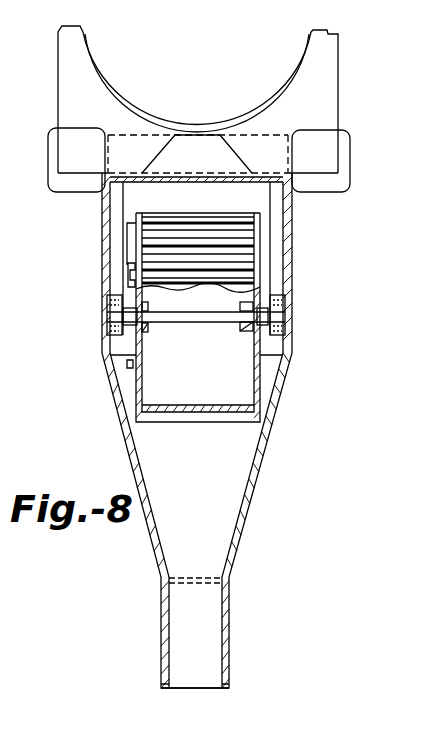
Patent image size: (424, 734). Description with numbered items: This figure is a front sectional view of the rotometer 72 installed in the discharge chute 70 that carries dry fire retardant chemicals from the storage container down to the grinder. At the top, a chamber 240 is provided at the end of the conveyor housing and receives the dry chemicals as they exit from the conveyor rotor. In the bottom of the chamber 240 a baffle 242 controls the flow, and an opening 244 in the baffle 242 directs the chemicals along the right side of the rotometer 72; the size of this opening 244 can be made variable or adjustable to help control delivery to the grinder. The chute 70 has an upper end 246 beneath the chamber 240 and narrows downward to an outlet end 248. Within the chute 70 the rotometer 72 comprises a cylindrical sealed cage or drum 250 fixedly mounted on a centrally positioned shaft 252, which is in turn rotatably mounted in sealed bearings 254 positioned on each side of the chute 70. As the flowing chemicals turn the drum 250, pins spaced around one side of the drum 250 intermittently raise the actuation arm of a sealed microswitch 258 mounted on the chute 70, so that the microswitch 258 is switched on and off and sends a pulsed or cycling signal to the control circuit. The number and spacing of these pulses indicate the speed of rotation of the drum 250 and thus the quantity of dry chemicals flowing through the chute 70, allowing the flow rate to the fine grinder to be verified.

The chute 70 is at (237, 483).
The rotometer 72 is at (213, 387).
The chamber 240 is at (118, 110).
The baffle 242 is at (240, 143).
The opening 244 is at (190, 134).
The upper end 246 is at (263, 182).
The outlet end 248 is at (205, 648).
The drum 250 is at (253, 273).
The shaft 252 is at (168, 318).
The sealed bearings 254 is at (115, 303).
The sealed microswitch 258 is at (130, 248).